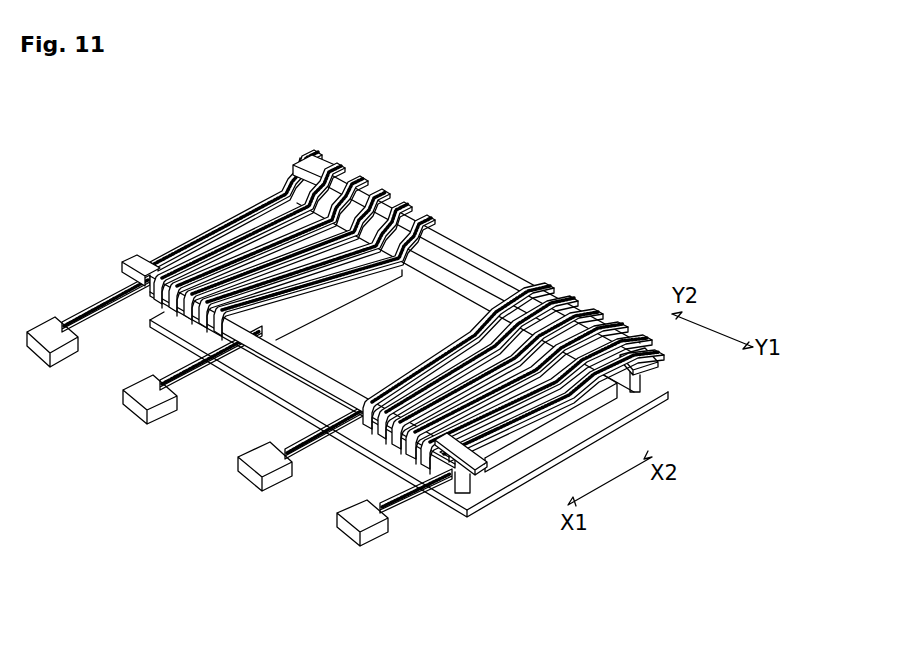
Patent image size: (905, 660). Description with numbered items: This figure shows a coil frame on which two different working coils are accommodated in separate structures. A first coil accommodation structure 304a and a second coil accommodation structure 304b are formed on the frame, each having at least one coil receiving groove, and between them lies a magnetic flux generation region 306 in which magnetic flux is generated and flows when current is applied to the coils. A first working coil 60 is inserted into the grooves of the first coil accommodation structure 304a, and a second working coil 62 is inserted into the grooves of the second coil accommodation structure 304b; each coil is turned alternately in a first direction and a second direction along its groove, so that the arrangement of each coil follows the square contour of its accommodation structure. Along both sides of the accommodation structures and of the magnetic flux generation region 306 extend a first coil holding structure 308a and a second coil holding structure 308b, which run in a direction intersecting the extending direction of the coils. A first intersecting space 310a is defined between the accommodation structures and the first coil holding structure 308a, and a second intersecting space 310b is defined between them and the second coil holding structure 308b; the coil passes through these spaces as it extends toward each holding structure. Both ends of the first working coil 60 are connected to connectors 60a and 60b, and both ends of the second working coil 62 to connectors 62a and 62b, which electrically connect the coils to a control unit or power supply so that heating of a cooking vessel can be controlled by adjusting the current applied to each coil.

The first working coil 60 is at (78, 298).
The connector 60a is at (40, 350).
The connector 60b is at (137, 407).
The second working coil 62 is at (300, 453).
The connector 62a is at (252, 472).
The connector 62b is at (348, 532).
The first coil accommodation structure 304a is at (357, 187).
The second coil accommodation structure 304b is at (570, 343).
The magnetic flux generation region 306 is at (408, 297).
The first coil holding structure 308a is at (138, 258).
The second coil holding structure 308b is at (307, 152).
The first intersecting space 310a is at (480, 477).
The second intersecting space 310b is at (488, 298).